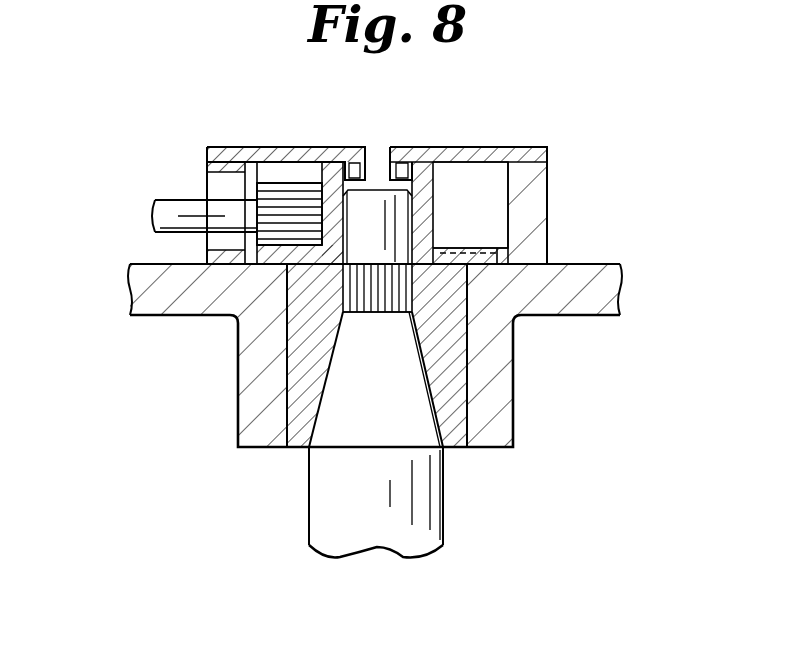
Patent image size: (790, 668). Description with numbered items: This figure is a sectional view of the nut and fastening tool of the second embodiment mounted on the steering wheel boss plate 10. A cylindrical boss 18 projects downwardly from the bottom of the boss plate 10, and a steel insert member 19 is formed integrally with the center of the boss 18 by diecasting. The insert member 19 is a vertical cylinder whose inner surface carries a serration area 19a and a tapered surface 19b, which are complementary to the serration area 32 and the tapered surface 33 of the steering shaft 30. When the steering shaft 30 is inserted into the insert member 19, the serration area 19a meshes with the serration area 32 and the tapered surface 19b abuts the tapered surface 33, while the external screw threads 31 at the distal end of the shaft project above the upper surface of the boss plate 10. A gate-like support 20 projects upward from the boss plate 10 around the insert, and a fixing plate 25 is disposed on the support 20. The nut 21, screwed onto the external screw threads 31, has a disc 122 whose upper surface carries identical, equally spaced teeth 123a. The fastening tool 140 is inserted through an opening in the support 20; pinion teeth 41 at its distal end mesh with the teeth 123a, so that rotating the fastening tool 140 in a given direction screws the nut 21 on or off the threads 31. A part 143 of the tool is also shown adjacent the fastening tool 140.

The boss plate 10 is at (603, 285).
The cylindrical boss 18 is at (504, 420).
The insert member 19 is at (455, 448).
The serration area 19a is at (392, 286).
The tapered surface 19b is at (312, 442).
The support 20 is at (535, 186).
The nut 21 is at (421, 176).
The fixing plate 25 is at (510, 152).
The steering shaft 30 is at (443, 528).
The external screw threads 31 is at (376, 208).
The serration area 32 is at (287, 337).
The tapered surface 33 is at (332, 400).
The coupling gear 41 is at (290, 186).
The disc 122 is at (497, 258).
The teeth 123a is at (465, 250).
The fastening tool 140 is at (165, 210).
The bearing wall 143 is at (220, 178).